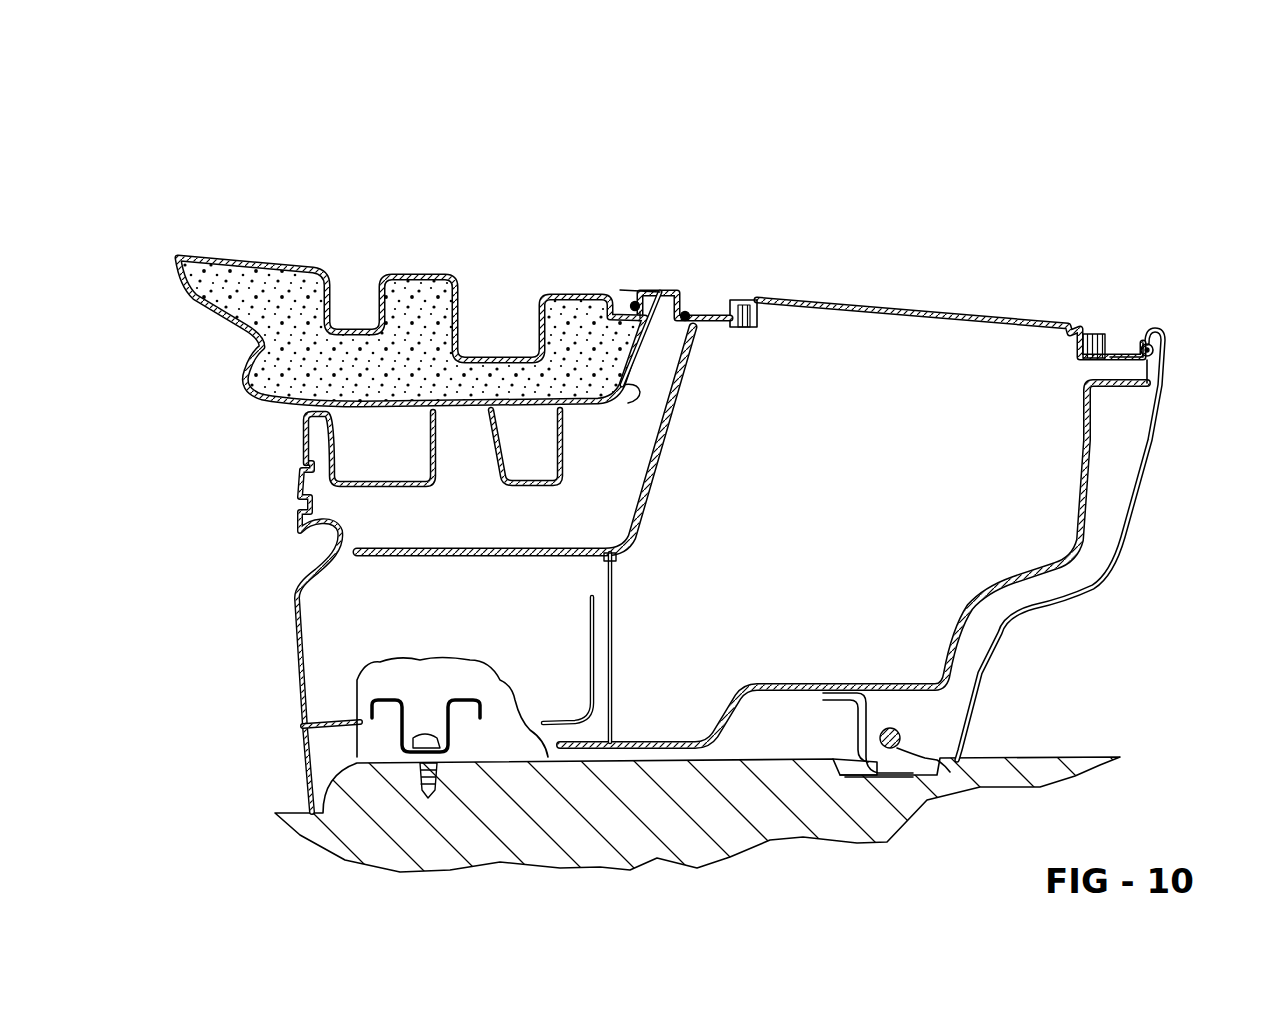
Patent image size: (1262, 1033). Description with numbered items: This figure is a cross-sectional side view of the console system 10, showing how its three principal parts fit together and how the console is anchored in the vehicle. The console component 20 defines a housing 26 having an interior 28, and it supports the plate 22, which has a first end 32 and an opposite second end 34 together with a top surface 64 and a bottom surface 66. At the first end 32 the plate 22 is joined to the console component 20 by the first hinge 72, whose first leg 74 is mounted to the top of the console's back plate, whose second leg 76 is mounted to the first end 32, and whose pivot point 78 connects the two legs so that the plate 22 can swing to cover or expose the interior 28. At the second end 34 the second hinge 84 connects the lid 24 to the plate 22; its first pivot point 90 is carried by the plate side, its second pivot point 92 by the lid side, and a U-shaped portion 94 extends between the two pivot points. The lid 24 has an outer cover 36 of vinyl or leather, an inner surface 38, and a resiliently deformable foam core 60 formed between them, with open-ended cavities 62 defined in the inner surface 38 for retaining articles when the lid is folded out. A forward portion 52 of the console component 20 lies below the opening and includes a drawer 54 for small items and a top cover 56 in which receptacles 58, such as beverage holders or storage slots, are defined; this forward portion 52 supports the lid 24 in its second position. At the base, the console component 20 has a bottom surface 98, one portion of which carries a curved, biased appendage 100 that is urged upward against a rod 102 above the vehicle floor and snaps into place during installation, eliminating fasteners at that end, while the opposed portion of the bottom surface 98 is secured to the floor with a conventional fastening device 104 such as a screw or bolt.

The console system 10 is at (741, 140).
The console component 20 is at (1142, 550).
The plate 22 is at (931, 290).
The lid 24 is at (426, 252).
The housing 26 is at (1105, 430).
The interior 28 is at (1045, 486).
The first end 32 is at (1045, 330).
The second end 34 is at (778, 316).
The cover 36 is at (583, 280).
The inner surface 38 is at (363, 389).
The forward portion 52 is at (286, 444).
The drawer 54 is at (297, 638).
The top cover 56 is at (630, 392).
The receptacle 58 is at (388, 470).
The core 60 is at (213, 272).
The open-ended cavity 62 is at (372, 288).
The top surface 64 is at (842, 300).
The bottom surface 66 is at (862, 318).
The first hinge 72 is at (1142, 338).
The first leg 74 is at (1120, 385).
The second leg 76 is at (1092, 325).
The pivot point 78 is at (1155, 348).
The second hinge 84 is at (660, 229).
The first pivot point 90 is at (688, 316).
The second pivot point 92 is at (633, 304).
The U-shaped portion 94 is at (655, 292).
The bottom surface 98 is at (853, 570).
The appendage 100 is at (880, 708).
The rod 102 is at (905, 735).
The fastening device 104 is at (427, 735).